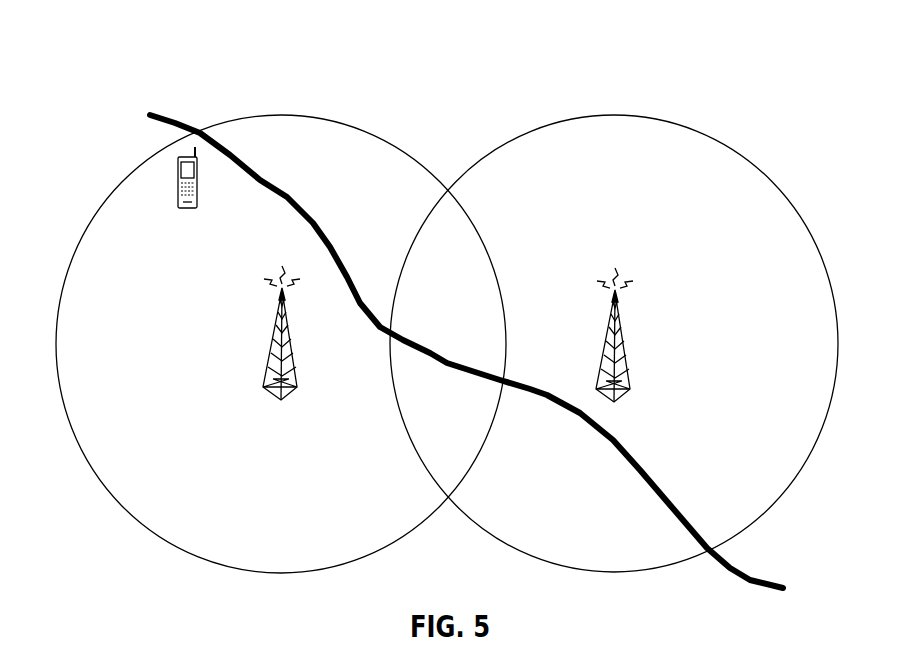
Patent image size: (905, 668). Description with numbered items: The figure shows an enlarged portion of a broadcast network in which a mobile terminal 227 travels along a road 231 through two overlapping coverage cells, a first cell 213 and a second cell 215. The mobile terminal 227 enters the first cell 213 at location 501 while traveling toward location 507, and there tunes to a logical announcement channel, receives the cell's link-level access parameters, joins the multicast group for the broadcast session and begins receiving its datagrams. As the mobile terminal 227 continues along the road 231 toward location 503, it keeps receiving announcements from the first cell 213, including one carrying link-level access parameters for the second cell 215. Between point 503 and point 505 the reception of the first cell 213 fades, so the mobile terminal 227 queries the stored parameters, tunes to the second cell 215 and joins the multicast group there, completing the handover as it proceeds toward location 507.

The first cell 213 is at (133, 518).
The second cell 215 is at (740, 153).
The mobile terminal 227 is at (188, 208).
The road 231 is at (157, 128).
The location 501 is at (196, 126).
The location 503 is at (384, 346).
The point 505 is at (502, 394).
The location 507 is at (708, 535).